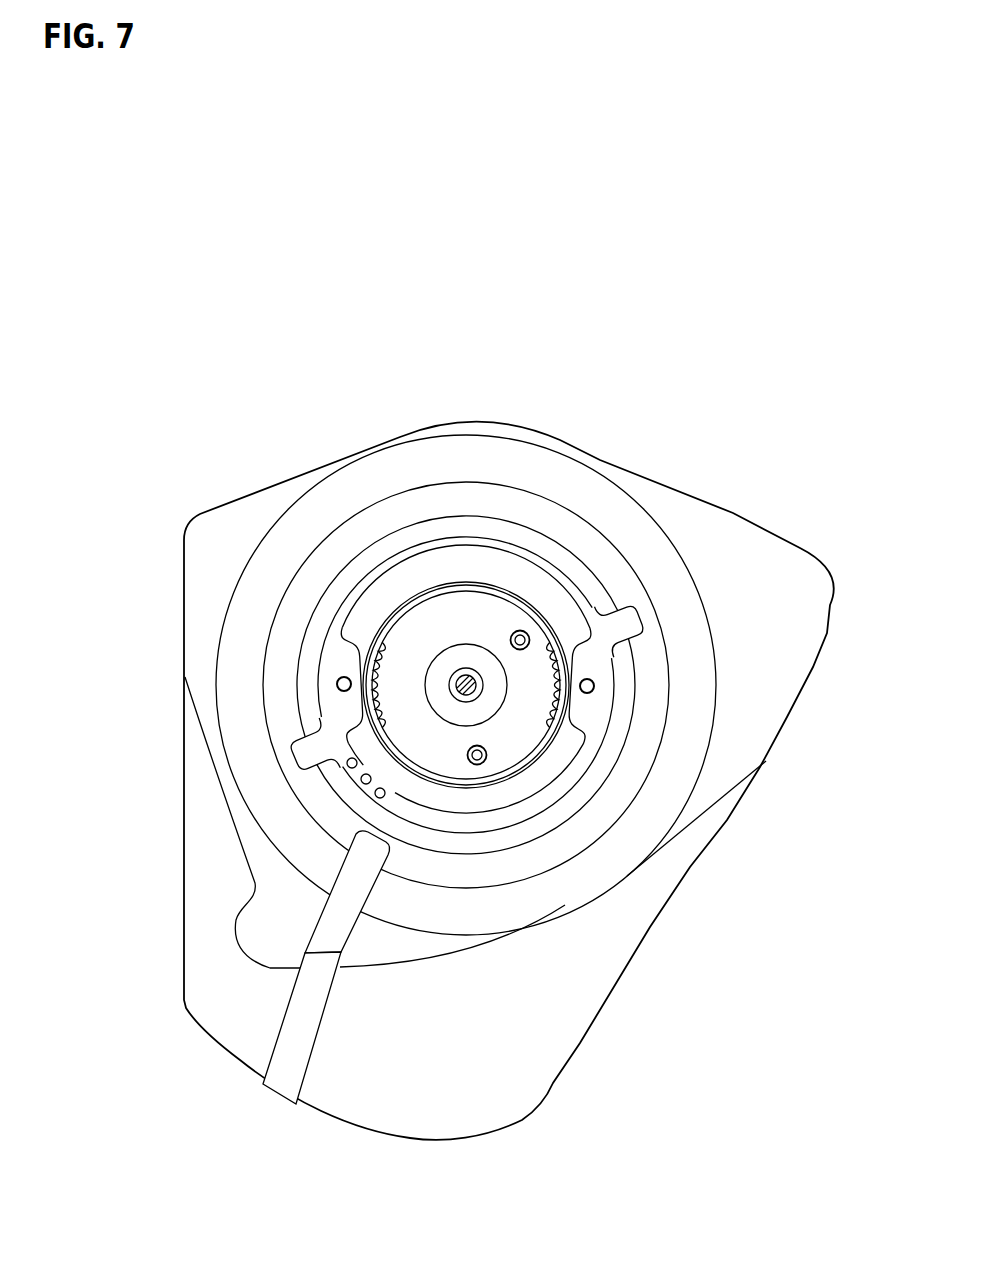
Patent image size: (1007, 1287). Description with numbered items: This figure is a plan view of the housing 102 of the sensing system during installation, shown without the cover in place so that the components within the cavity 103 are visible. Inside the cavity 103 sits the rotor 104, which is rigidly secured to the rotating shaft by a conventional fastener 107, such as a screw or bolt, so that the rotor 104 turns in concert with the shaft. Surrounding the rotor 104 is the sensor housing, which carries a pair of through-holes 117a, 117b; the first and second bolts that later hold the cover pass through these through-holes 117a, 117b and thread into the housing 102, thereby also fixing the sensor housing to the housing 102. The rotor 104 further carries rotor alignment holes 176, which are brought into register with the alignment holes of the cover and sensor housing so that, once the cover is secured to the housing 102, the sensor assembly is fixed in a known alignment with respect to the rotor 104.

The housing 102 is at (653, 498).
The cavity 103 is at (380, 604).
The rotor 104 is at (496, 592).
The fastener 107 is at (458, 692).
The through-hole 117a is at (594, 686).
The through-hole 117b is at (337, 684).
The rotor alignment hole 176 is at (528, 634).